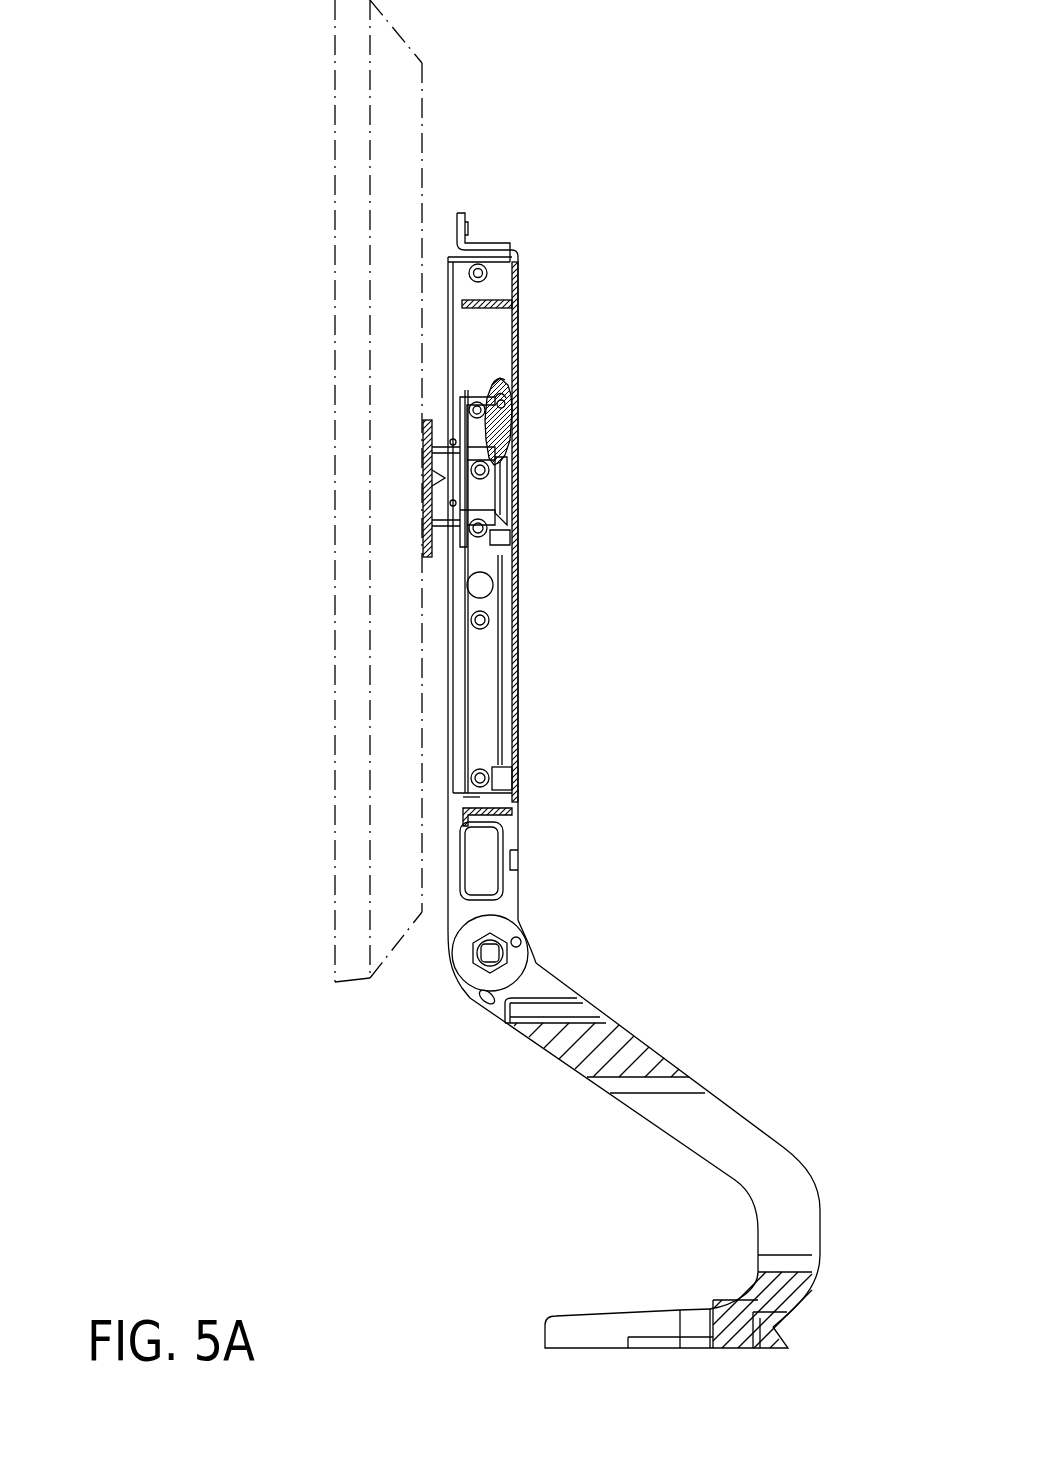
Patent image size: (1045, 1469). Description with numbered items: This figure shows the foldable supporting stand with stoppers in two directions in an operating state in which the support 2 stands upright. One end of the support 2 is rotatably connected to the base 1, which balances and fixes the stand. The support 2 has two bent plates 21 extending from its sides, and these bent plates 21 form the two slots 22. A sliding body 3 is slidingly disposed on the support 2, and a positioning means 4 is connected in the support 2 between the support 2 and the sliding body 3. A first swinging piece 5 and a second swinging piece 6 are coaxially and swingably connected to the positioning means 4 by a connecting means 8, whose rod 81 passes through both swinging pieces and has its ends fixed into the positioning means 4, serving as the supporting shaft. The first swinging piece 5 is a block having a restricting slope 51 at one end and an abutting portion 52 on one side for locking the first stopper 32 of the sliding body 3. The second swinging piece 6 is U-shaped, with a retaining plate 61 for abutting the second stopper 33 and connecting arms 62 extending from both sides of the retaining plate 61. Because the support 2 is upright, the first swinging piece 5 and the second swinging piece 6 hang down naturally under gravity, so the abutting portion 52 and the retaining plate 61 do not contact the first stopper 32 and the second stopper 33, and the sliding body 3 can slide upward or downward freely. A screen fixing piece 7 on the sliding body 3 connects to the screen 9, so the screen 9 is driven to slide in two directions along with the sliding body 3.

The base 1 is at (752, 1110).
The support 2 is at (523, 670).
The bent plates 21 is at (453, 660).
The slots 22 is at (482, 708).
The sliding body 3 is at (465, 427).
The first stopper 32 is at (467, 453).
The second stopper 33 is at (467, 518).
The positioning means 4 is at (478, 380).
The first swinging piece 5 is at (500, 430).
The restricting slope 51 is at (503, 395).
The abutting portion 52 is at (480, 473).
The second swinging piece 6 is at (506, 478).
The retaining plate 61 is at (507, 543).
The connecting arms 62 is at (505, 505).
The screen fixing piece 7 is at (422, 537).
The connecting means 8 is at (554, 390).
The rod 81 is at (512, 400).
The screen 9 is at (332, 152).